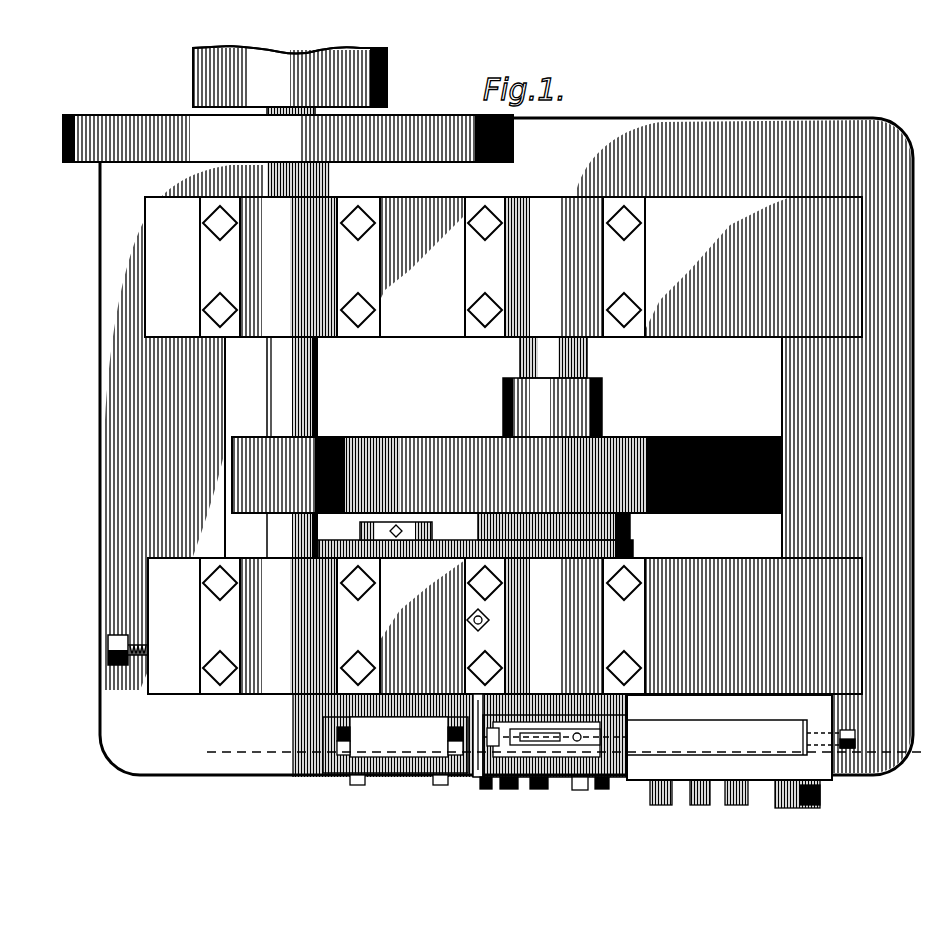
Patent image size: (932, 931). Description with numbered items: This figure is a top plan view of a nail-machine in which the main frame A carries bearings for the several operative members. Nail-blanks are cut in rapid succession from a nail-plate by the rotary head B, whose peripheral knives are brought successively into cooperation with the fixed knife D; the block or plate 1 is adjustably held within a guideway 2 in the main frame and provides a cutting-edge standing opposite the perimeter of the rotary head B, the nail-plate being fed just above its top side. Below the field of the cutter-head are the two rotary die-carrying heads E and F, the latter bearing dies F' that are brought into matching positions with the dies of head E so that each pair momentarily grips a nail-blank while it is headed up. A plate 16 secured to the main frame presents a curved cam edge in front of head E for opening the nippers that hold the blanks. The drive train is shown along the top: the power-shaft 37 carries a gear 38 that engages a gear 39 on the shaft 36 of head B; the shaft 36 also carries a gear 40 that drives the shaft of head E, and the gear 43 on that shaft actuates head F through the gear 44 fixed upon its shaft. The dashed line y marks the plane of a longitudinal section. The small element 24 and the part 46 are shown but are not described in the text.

The main frame A is at (506, 446).
The power-shaft 37 is at (293, 354).
The shaft of head B 36 is at (535, 357).
The gear 38 is at (323, 437).
The gear 39 is at (428, 447).
The gear 40 is at (633, 525).
The gear 43 is at (635, 551).
The gear 44 is at (362, 530).
The bearing piece 46 is at (432, 533).
The pivot pin 24 is at (470, 622).
The rotary die-carrying head F is at (395, 764).
The dies F' is at (371, 735).
The die-carrying head E is at (478, 779).
The rotary head B is at (567, 752).
The plate 16 is at (580, 790).
The fixed knife D is at (729, 737).
The block or plate 1 is at (717, 737).
The guideway 2 is at (810, 720).
The section line y is at (556, 751).